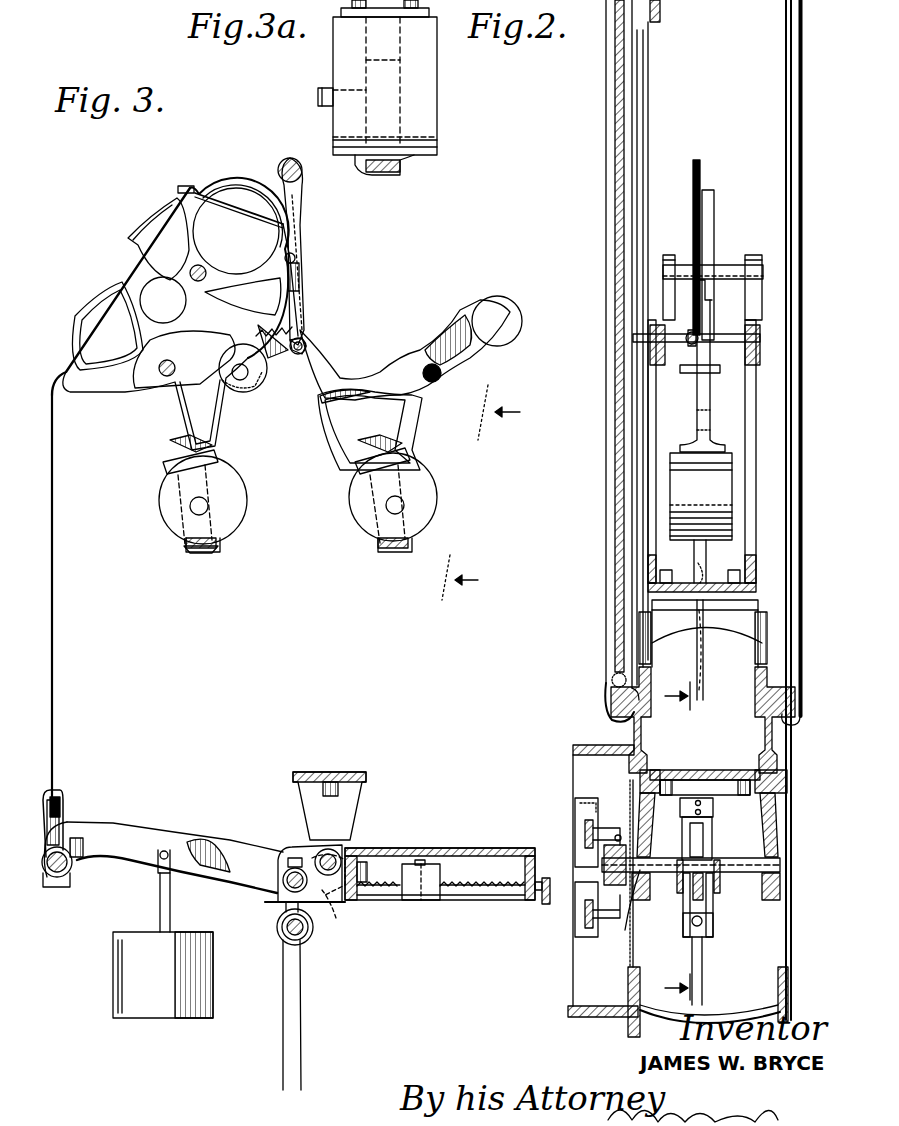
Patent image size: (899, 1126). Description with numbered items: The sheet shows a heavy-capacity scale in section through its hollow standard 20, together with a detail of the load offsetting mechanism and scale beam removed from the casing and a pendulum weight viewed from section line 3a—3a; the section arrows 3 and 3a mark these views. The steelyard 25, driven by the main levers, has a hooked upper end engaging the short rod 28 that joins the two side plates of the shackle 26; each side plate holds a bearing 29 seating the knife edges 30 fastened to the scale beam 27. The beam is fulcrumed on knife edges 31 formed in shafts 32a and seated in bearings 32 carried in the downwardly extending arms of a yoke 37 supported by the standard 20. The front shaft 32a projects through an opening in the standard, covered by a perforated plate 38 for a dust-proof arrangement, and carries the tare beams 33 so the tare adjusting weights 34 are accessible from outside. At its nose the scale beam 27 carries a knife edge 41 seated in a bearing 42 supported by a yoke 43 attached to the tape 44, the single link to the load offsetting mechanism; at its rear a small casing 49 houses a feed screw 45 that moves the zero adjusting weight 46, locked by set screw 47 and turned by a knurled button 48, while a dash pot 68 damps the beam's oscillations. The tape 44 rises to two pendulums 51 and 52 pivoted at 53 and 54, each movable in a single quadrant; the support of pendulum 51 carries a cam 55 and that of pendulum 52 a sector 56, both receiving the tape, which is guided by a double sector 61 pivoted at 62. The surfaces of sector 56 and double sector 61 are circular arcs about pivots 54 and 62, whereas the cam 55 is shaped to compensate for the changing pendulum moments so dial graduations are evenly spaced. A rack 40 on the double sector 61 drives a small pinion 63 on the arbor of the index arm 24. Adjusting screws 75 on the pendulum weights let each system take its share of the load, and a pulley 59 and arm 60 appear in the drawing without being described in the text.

In FIG. 2, the hollow standard 20 is at (612, 722).
In FIG. 2, the index arm 24 is at (640, 88).
In FIG. 3, the steelyard 25 is at (295, 1015).
In FIG. 2, the steelyard 25 is at (702, 990).
In FIG. 3, the shackle 26 is at (290, 905).
In FIG. 3, the scale beam 27 is at (160, 845).
In FIG. 2, the scale beam 27 is at (700, 900).
In FIG. 3, the short rod 28 is at (303, 935).
In FIG. 2, the short rod 28 is at (703, 925).
In FIG. 3, the bearing 29 is at (290, 848).
In FIG. 3, the knife edges 30 is at (288, 887).
In FIG. 3, the knife edges 31 is at (338, 858).
In FIG. 2, the knife edges 31 is at (648, 875).
In FIG. 3, the bearings 32 is at (342, 912).
In FIG. 2, the bearings 32 is at (722, 880).
In FIG. 2, the shafts 32a is at (618, 838).
In FIG. 2, the tare beams 33 is at (586, 832).
In FIG. 2, the tare adjusting weights 34 is at (583, 805).
In FIG. 3, the yoke 37 is at (355, 798).
In FIG. 2, the yoke 37 is at (760, 775).
In FIG. 2, the plate 38 is at (628, 957).
In FIG. 3, the rack 40 is at (296, 320).
In FIG. 2, the rack 40 is at (680, 372).
In FIG. 3, the knife edge 41 is at (62, 855).
In FIG. 3, the bearing 42 is at (58, 888).
In FIG. 3, the yoke 43 is at (50, 815).
In FIG. 2, the yoke 43 is at (713, 808).
In FIG. 3, the tape 44 is at (55, 648).
In FIG. 2, the tape 44 is at (700, 552).
In FIG. 3, the feed screw 45 is at (495, 895).
In FIG. 3, the zero adjusting weight 46 is at (425, 890).
In FIG. 3, the set screw 47 is at (420, 860).
In FIG. 3, the knurled button 48 is at (540, 898).
In FIG. 3, the small casing 49 is at (497, 848).
In FIG. 3, the pendulum 51 is at (232, 495).
In FIG. 3A, the pendulum 52 is at (422, 108).
In FIG. 3, the pendulum 52 is at (372, 497).
In FIG. 2, the pendulum 52 is at (690, 482).
In FIG. 3, the pivot 53 is at (165, 377).
In FIG. 3, the pivot 54 is at (440, 378).
In FIG. 3, the cam member 55 is at (70, 370).
In FIG. 3, the sector member 56 is at (322, 398).
In FIG. 3, the pulley 59 is at (222, 388).
In FIG. 3, the arm 60 is at (412, 372).
In FIG. 2, the arm 60 is at (700, 412).
In FIG. 3, the double sector 61 is at (188, 188).
In FIG. 3, the pivot 62 is at (200, 265).
In FIG. 2, the pivot 62 is at (672, 266).
In FIG. 3, the pinion 63 is at (295, 352).
In FIG. 2, the pinion 63 is at (635, 338).
In FIG. 3, the dash pot 68 is at (130, 975).
In FIG. 3A, the adjusting weights 75 is at (400, 172).
In FIG. 3, the adjusting weights 75 is at (200, 552).
In FIG. 2, the section line 3 is at (680, 827).
In FIG. 3, the section line 3a is at (467, 491).